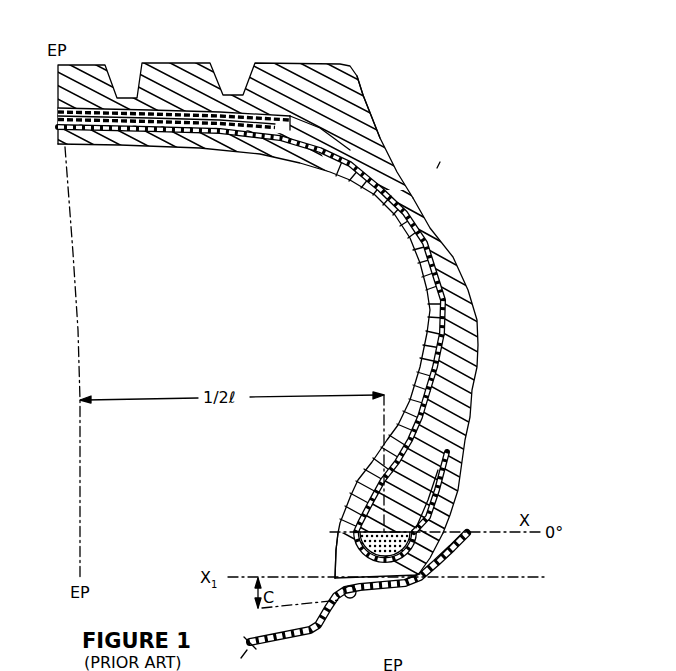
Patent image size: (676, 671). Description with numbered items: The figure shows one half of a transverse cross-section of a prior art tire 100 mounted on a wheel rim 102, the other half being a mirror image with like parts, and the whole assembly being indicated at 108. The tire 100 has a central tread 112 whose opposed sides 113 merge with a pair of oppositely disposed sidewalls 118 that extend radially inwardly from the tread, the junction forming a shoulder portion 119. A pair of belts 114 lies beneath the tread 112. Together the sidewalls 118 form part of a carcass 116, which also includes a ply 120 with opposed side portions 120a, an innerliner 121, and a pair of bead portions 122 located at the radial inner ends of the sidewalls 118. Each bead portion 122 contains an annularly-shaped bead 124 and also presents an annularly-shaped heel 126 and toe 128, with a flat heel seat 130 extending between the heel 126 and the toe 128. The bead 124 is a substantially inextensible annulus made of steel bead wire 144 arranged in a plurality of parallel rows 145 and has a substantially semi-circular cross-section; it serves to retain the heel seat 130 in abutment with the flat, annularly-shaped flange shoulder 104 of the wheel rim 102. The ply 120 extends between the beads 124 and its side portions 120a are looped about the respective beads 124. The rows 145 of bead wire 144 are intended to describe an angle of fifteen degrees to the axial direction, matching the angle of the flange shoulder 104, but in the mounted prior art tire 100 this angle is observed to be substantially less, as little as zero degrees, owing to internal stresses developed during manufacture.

The prior art tire 100 is at (440, 162).
The wheel rim 102 is at (251, 628).
The flange shoulder 104 is at (347, 598).
The tire and rim assembly 108 is at (402, 46).
The central tread 112 is at (207, 62).
The opposed sides of the tread 113 is at (362, 97).
The belts 114 is at (186, 110).
The carcass 116 is at (334, 182).
The sidewalls 118 is at (472, 293).
The shoulder portion 119 is at (380, 138).
The ply 120 is at (398, 218).
The side portions of the ply 120a is at (447, 452).
The innerliner 121 is at (422, 274).
The bead portions 122 is at (345, 493).
The bead 124 is at (350, 535).
The heel 126 is at (418, 571).
The toe 128 is at (330, 568).
The heel seat 130 is at (382, 591).
The steel bead wire 144 is at (447, 506).
The parallel rows of bead wire 145 is at (450, 513).